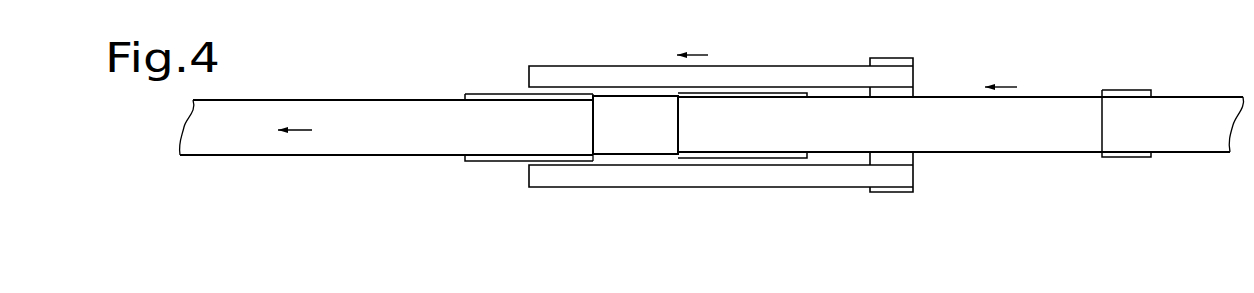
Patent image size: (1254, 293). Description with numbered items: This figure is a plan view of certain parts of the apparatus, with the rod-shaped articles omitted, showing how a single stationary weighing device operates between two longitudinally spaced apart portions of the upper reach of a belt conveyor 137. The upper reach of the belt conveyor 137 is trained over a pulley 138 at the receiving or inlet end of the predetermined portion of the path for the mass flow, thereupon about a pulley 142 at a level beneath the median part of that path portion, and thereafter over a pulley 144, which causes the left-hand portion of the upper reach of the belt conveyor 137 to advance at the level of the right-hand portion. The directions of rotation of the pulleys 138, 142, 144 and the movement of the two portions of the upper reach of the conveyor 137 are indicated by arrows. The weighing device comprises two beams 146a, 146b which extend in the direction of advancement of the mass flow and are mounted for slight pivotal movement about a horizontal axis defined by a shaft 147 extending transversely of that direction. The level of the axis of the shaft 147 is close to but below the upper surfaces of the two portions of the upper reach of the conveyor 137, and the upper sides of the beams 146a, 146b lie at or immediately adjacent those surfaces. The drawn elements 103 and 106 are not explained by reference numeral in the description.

The belt conveyor 137 is at (343, 113).
The pulley 144 is at (485, 95).
The pulley 142 is at (633, 155).
The pulley 138 is at (733, 157).
The beam 146a is at (789, 77).
The beam 146b is at (785, 177).
The shaft 147 is at (913, 62).
The sleeve 103 is at (1137, 93).
The tube 106 is at (1188, 140).